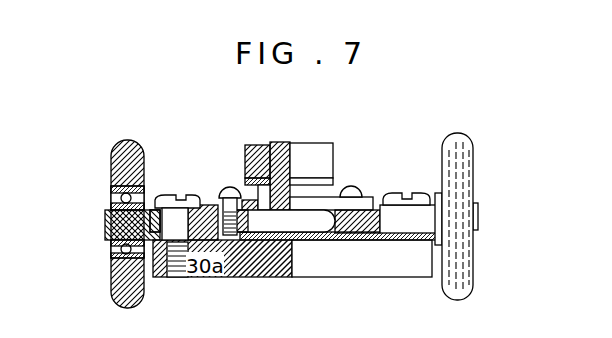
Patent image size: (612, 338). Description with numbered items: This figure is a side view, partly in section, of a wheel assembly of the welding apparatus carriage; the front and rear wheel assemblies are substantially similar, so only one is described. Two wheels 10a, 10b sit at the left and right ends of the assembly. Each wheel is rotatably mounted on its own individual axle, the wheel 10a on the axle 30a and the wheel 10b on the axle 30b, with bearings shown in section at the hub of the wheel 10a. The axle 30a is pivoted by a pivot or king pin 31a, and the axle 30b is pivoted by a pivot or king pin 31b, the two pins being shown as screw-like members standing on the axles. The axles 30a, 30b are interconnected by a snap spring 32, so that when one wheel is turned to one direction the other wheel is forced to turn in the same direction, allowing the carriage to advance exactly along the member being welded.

The wheel 10a is at (118, 152).
The wheel 10b is at (455, 143).
The axle 30a is at (208, 231).
The axle 30b is at (367, 228).
The pivot or king pin 31a is at (186, 196).
The pivot or king pin 31b is at (398, 194).
The snap spring 32 is at (260, 258).